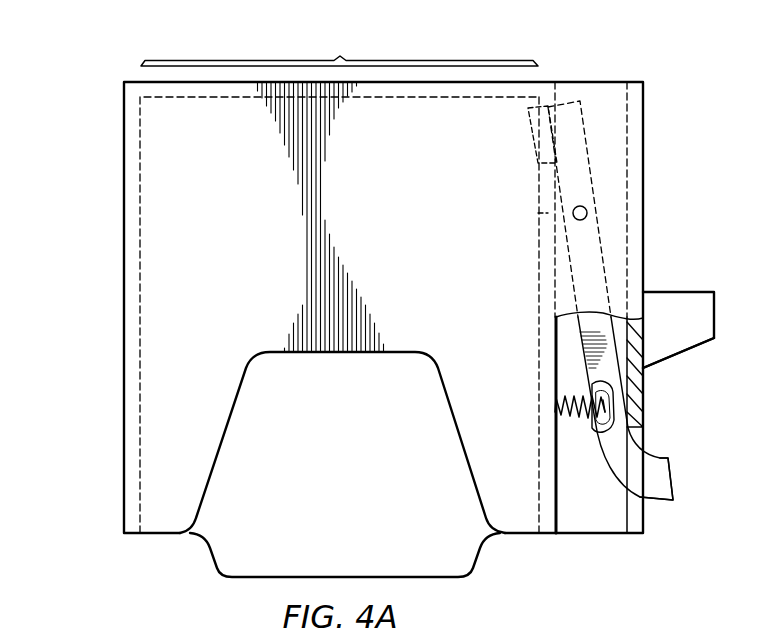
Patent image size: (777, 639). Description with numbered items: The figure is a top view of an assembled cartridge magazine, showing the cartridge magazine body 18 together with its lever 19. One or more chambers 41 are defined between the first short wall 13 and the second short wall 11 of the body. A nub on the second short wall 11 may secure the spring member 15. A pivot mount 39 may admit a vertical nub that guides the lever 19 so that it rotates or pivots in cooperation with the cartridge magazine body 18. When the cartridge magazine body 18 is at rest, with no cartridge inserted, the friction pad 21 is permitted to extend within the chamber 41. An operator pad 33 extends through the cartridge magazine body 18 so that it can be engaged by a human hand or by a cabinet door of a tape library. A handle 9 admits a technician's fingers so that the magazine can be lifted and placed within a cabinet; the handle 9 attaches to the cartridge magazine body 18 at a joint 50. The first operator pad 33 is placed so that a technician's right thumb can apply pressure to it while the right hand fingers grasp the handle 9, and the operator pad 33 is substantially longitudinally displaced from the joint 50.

The cartridge magazine body 18 is at (115, 60).
The chamber 41 is at (339, 190).
The first short wall 13 is at (124, 312).
The second short wall 11 is at (538, 295).
The friction pad 21 is at (532, 140).
The lever 19 is at (589, 123).
The pivot mount 39 is at (588, 213).
The spring member 15 is at (557, 378).
The joint 50 is at (645, 305).
The handle 9 is at (683, 357).
The operator pad 33 is at (677, 478).